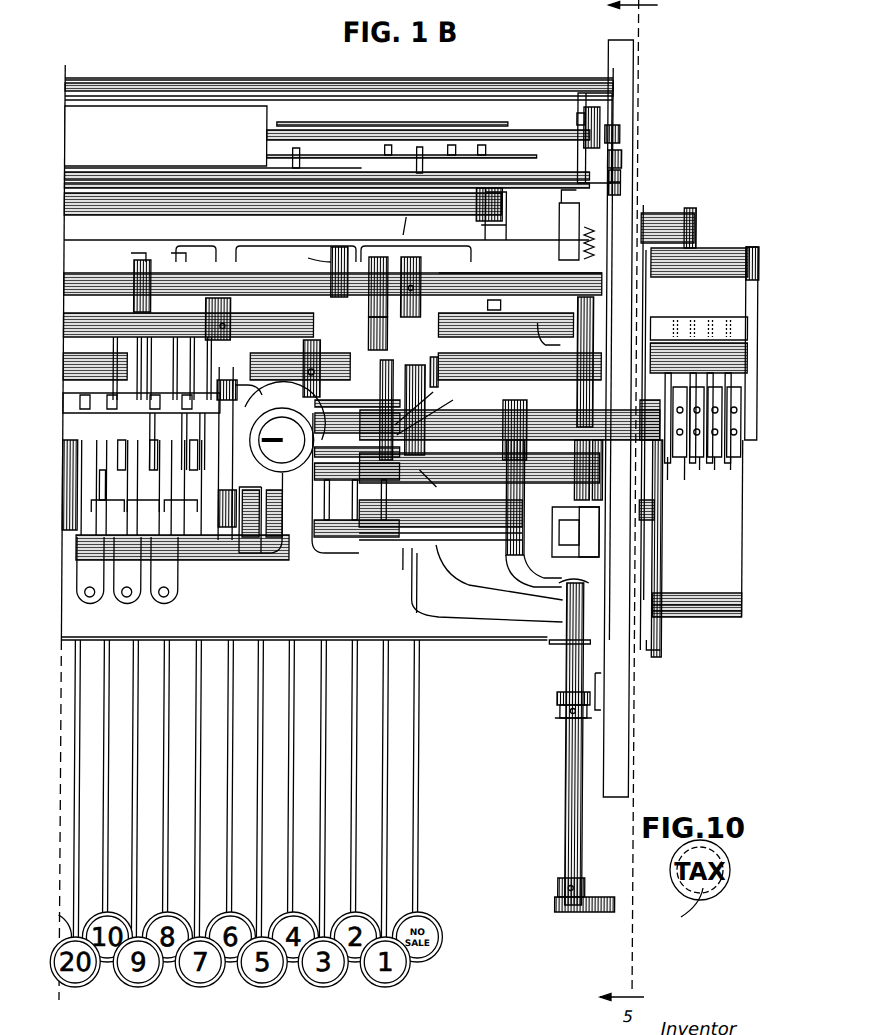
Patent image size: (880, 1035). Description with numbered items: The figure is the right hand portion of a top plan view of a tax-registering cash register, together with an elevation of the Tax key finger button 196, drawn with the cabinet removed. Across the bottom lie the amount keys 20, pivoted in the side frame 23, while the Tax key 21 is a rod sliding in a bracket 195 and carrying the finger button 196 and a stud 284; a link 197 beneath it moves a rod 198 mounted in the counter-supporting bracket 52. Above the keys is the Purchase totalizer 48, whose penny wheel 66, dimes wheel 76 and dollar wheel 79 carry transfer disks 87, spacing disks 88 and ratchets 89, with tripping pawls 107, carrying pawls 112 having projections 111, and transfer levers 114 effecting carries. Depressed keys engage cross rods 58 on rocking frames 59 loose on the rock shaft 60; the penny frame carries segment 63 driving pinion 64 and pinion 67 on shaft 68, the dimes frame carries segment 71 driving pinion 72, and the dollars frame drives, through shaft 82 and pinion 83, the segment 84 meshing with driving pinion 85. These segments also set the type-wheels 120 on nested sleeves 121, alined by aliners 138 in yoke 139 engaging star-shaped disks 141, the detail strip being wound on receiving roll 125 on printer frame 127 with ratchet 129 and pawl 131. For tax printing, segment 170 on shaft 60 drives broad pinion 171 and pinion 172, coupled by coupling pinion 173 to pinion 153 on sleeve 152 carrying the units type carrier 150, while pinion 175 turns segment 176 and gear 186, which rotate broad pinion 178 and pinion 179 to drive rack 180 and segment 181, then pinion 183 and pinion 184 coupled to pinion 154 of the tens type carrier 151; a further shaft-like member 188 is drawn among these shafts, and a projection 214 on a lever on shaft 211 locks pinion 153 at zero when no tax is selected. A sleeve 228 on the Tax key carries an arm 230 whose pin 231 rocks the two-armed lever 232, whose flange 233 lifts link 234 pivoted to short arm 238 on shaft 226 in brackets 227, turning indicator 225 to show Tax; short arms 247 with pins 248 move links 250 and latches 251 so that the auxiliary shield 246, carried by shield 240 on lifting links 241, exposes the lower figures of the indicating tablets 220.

The amount or purchase keys 20 is at (385, 773).
The Tax key 21 is at (577, 857).
The side frame 23 is at (617, 697).
The Purchase totalizer 48 is at (191, 525).
The counter-supporting bracket 52 is at (297, 540).
The cross rod 58 is at (505, 204).
The rocking frame 59 is at (503, 233).
The rock shaft 60 is at (427, 283).
The registering segment 63 is at (236, 253).
The pinion 64 is at (210, 440).
The Penny totalizer wheel 66 is at (205, 455).
The pinion 67 is at (233, 380).
The shaft 68 is at (543, 323).
The registering rack segment 71 is at (176, 253).
The pinion 72 is at (168, 470).
The Dimes totalizer wheel 76 is at (124, 485).
The Dollar totalizer wheel 79 is at (110, 412).
The shaft 82 is at (590, 283).
The pinion 83 is at (133, 266).
The segment 84 is at (139, 253).
The driving pinion 85 is at (132, 463).
The transfer disk 87 is at (160, 445).
The spacing disk 88 is at (183, 441).
The ratchet 89 is at (96, 435).
The tripping pawl 107 is at (160, 490).
The finger or projection 111 is at (183, 498).
The carrying pawl 112 is at (168, 605).
The transfer lever 114 is at (172, 596).
The type-wheels 120 is at (732, 460).
The nested sleeves 121 is at (711, 470).
The receiving roll 125 is at (661, 648).
The printer frame 127 is at (636, 220).
The ratchet 129 is at (656, 588).
The pawl 131 is at (660, 510).
The aliners 138 is at (692, 325).
The yoke 139 is at (717, 327).
The star-shaped disks 141 is at (740, 451).
The units type carrier 150 is at (676, 460).
The tens type carrier 151 is at (698, 463).
The sleeve 152 is at (467, 422).
The pinion 153 is at (426, 401).
The pinion 154 is at (405, 327).
The segment 170 is at (408, 330).
The broad pinion 171 is at (437, 410).
The pinion 172 is at (432, 440).
The coupling pinion 173 is at (432, 358).
The pinion 175 is at (308, 257).
The segment 176 is at (330, 243).
The broad pinion 178 is at (347, 300).
The pinion 179 is at (327, 368).
The rack 180 is at (360, 382).
The segment 181 is at (405, 214).
The pinion 183 is at (367, 413).
The pinion 184 is at (380, 451).
The gear 186 is at (282, 253).
The shaft 188 is at (602, 353).
The bracket 195 is at (602, 705).
The finger button 196 is at (618, 906).
The link 197 is at (442, 578).
The rod 198 is at (405, 535).
The shaft 211 is at (472, 445).
The projection 214 is at (437, 487).
The indicating tablets 220 is at (411, 125).
The indicator 225 is at (213, 122).
The shaft 226 is at (519, 137).
The brackets 227 is at (599, 107).
The sleeve 228 is at (587, 548).
The arm 230 is at (583, 530).
The pin 231 is at (565, 537).
The two-armed lever 232 is at (575, 391).
The flange 233 is at (588, 174).
The link 234 is at (590, 102).
The short arm 238 is at (583, 126).
The shield 240 is at (297, 83).
The lifting links 241 is at (560, 227).
The auxiliary shield 246 is at (530, 77).
The short arm 247 is at (617, 143).
The pin 248 is at (619, 161).
The link 250 is at (619, 176).
The latches 251 is at (607, 197).
The stud 284 is at (582, 520).